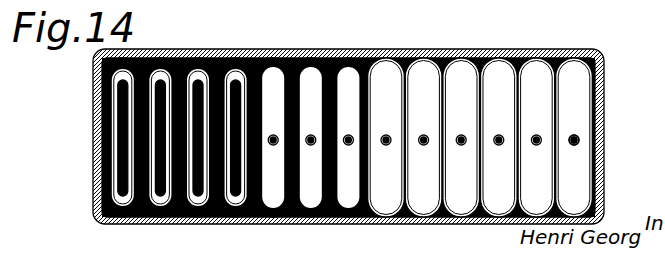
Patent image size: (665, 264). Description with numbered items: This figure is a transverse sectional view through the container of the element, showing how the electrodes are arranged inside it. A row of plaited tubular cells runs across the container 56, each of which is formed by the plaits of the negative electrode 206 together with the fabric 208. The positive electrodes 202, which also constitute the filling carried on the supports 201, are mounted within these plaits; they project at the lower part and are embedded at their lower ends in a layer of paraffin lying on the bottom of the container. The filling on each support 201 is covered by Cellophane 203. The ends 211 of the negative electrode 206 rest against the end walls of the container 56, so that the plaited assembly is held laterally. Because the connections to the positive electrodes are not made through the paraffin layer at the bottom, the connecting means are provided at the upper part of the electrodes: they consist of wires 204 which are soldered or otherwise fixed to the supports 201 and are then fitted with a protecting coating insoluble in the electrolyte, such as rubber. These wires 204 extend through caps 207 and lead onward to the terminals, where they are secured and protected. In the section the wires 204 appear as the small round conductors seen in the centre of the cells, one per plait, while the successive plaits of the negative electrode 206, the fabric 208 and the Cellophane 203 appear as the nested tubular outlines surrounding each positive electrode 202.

The ends of the negative electrode 211 is at (93, 82).
The fabric 208 is at (104, 181).
The supports 201 is at (148, 208).
The Cellophane 203 is at (199, 62).
The positive electrodes 202 is at (93, 127).
The negative electrode 206 is at (347, 80).
The caps 207 is at (455, 80).
The wires 204 is at (579, 142).
The casing lid 56 is at (226, 52).